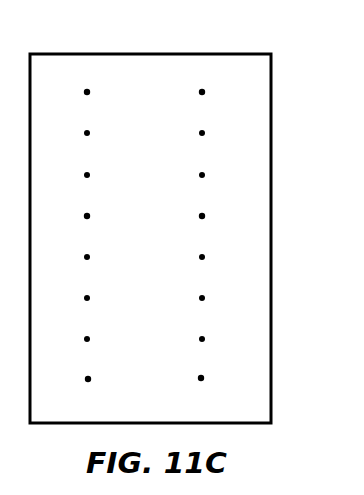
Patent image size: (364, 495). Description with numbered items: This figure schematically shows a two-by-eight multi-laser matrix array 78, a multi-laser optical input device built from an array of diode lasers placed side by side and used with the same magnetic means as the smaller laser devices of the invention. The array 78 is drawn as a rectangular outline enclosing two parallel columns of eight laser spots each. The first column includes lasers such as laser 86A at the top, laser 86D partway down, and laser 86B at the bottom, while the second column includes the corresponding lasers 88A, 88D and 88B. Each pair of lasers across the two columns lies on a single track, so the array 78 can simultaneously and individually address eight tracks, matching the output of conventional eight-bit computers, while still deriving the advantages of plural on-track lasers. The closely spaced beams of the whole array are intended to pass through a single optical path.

The multi-laser matrix array 78 is at (264, 250).
The laser of first column 86A is at (88, 90).
The laser of first column 86B is at (89, 378).
The laser of first column 86D is at (88, 215).
The laser of second column 88A is at (203, 90).
The laser of second column 88B is at (202, 378).
The laser of second column 88D is at (203, 216).